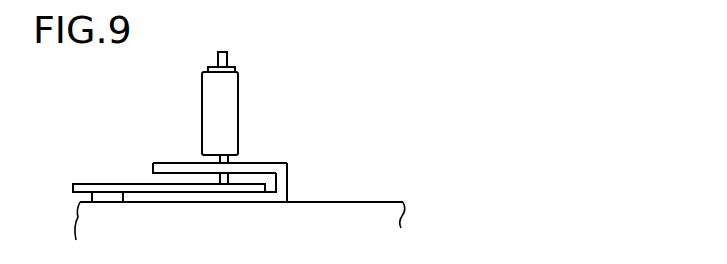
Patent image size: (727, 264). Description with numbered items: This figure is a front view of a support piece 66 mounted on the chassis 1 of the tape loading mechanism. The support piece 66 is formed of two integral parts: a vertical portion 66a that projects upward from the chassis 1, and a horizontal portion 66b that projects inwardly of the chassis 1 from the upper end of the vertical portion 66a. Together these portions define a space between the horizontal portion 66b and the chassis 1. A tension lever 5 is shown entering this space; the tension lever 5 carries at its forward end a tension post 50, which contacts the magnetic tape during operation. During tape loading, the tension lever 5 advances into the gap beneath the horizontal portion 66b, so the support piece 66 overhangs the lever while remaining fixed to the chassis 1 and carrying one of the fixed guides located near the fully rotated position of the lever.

The chassis 1 is at (368, 212).
The tension lever 5 is at (127, 187).
The tension post 50 is at (229, 108).
The support piece 66 is at (270, 149).
The vertical portion 66a is at (285, 180).
The horizontal portion 66b is at (258, 168).